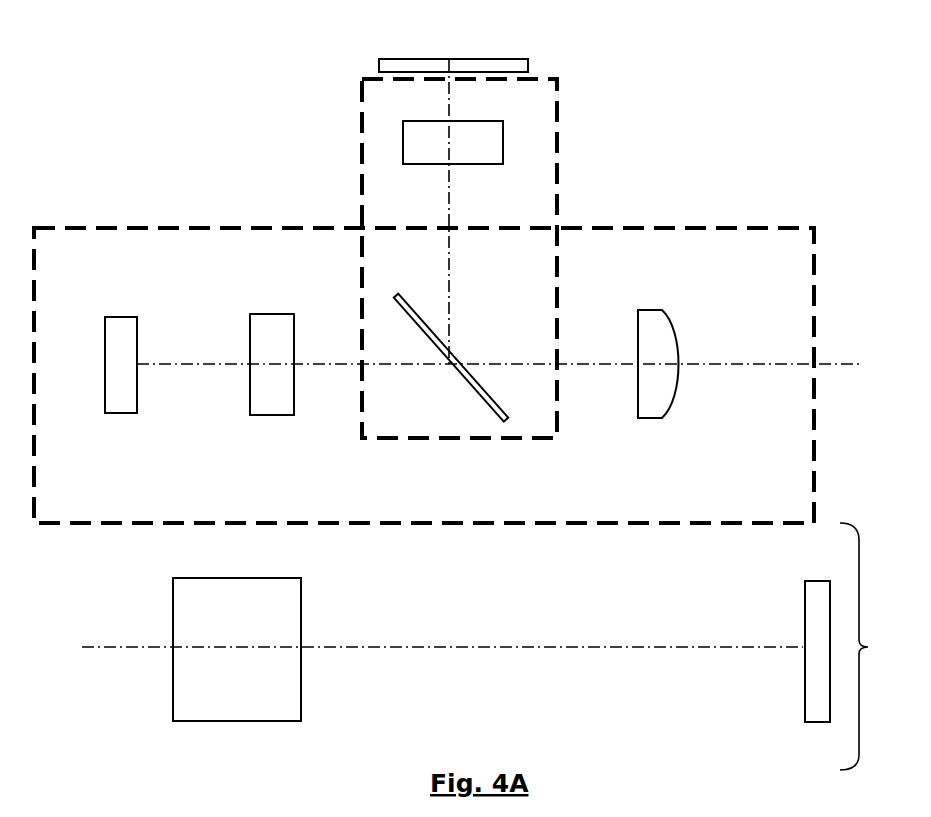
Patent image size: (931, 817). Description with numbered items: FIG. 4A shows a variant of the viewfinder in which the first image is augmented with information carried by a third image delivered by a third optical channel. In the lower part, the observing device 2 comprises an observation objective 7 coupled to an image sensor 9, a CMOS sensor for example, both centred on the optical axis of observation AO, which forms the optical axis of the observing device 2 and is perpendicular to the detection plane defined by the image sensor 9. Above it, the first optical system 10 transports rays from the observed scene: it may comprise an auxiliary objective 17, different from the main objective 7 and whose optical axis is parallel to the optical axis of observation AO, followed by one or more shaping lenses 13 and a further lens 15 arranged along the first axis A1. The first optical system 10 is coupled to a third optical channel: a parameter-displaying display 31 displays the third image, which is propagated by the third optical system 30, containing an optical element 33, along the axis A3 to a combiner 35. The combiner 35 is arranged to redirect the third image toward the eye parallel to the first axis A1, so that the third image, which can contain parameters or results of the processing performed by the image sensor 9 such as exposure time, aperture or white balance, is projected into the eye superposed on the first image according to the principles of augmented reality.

The observing device 2 is at (868, 647).
The observation objective 7 is at (209, 589).
The image sensor 9 is at (809, 593).
The first optical system 10 is at (185, 227).
The shaping lens 13 is at (275, 343).
The plano-convex lens 15 is at (655, 405).
The auxiliary objective 17 is at (125, 345).
The third optical system 30 is at (358, 121).
The parameter-displaying display 31 is at (450, 57).
The optical element 33 is at (419, 134).
The combiner 35 is at (454, 369).
The first axis A1 is at (595, 362).
The third optical axis A3 is at (448, 224).
The optical axis of observation AO is at (717, 651).